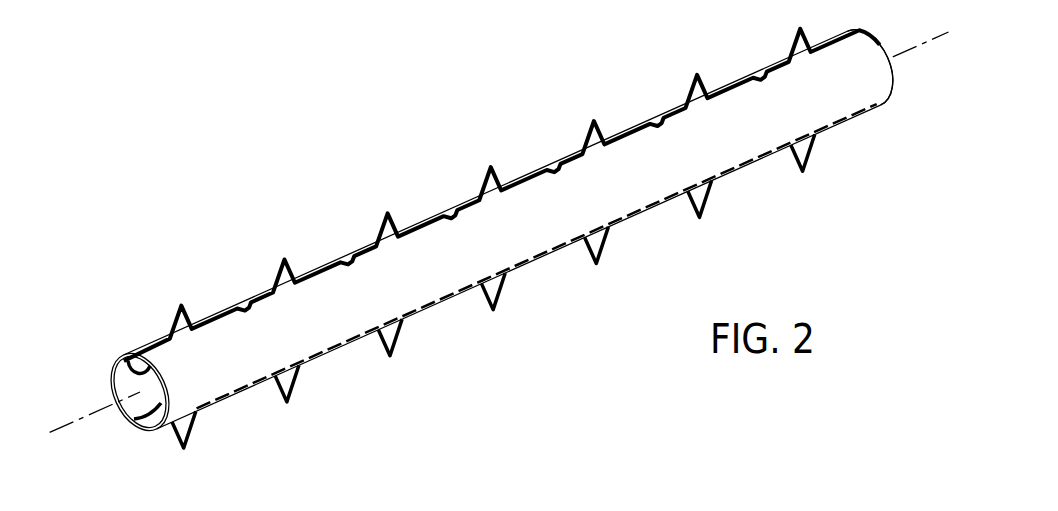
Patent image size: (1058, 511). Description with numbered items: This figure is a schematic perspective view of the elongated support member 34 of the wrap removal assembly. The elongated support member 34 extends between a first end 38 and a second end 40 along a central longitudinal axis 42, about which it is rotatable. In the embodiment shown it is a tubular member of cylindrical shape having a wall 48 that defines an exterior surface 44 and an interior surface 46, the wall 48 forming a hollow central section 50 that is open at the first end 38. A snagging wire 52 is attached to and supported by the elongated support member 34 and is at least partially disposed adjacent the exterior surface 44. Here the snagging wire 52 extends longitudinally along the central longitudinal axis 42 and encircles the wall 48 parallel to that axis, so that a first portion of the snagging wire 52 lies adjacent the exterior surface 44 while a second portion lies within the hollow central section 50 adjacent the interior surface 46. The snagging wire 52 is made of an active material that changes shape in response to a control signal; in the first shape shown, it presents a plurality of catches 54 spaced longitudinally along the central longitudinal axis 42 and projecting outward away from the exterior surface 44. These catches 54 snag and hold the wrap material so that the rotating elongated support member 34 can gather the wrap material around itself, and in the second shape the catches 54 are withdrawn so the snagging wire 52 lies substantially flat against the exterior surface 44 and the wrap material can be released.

The elongated support member 34 is at (147, 344).
The first end 38 is at (112, 417).
The second end 40 is at (893, 77).
The central longitudinal axis 42 is at (68, 420).
The exterior surface 44 is at (303, 308).
The interior surface 46 is at (121, 370).
The wall 48 is at (165, 390).
The hollow central section 50 is at (128, 387).
The snagging wire 52 is at (330, 260).
The catch 54 is at (497, 177).